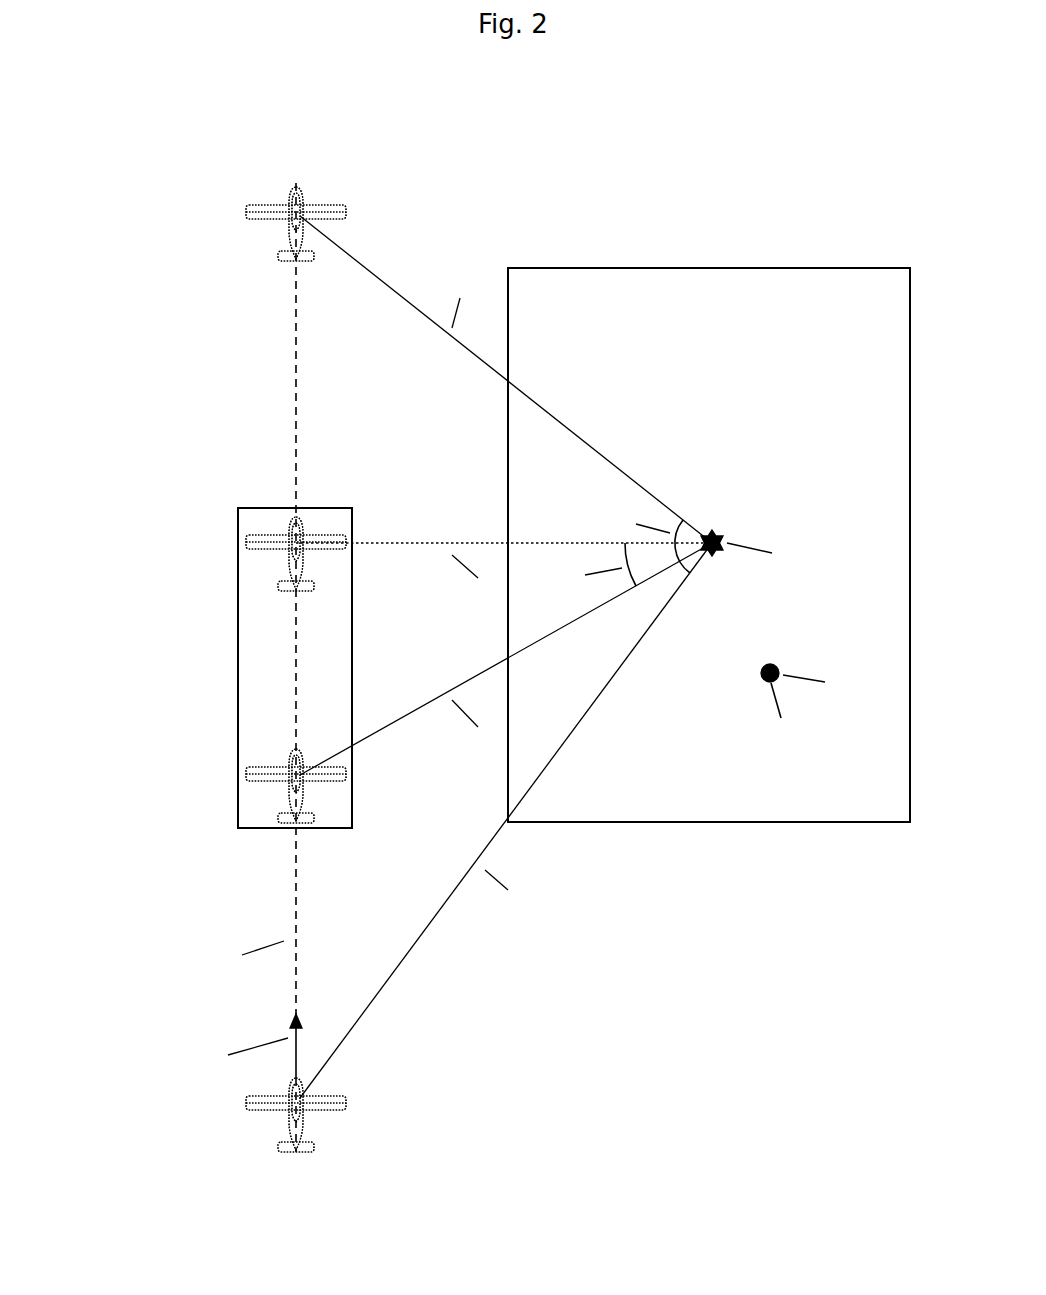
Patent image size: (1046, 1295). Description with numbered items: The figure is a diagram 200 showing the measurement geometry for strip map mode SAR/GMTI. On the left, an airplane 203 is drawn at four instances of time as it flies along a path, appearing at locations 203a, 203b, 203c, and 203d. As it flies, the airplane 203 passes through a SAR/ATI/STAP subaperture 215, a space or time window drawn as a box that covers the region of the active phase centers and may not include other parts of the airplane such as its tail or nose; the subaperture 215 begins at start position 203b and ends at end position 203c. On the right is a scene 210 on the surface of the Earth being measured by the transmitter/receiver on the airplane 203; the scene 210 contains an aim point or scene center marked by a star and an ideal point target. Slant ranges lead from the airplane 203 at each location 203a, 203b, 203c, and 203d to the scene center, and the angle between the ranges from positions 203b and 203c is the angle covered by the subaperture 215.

The diagram 200 is at (188, 143).
The airplane 203 is at (270, 212).
The location 203a is at (298, 1101).
The location 203b is at (298, 777).
The location 203c is at (298, 545).
The location 203d is at (298, 212).
The scene 210 is at (710, 826).
The subaperture 215 is at (238, 675).